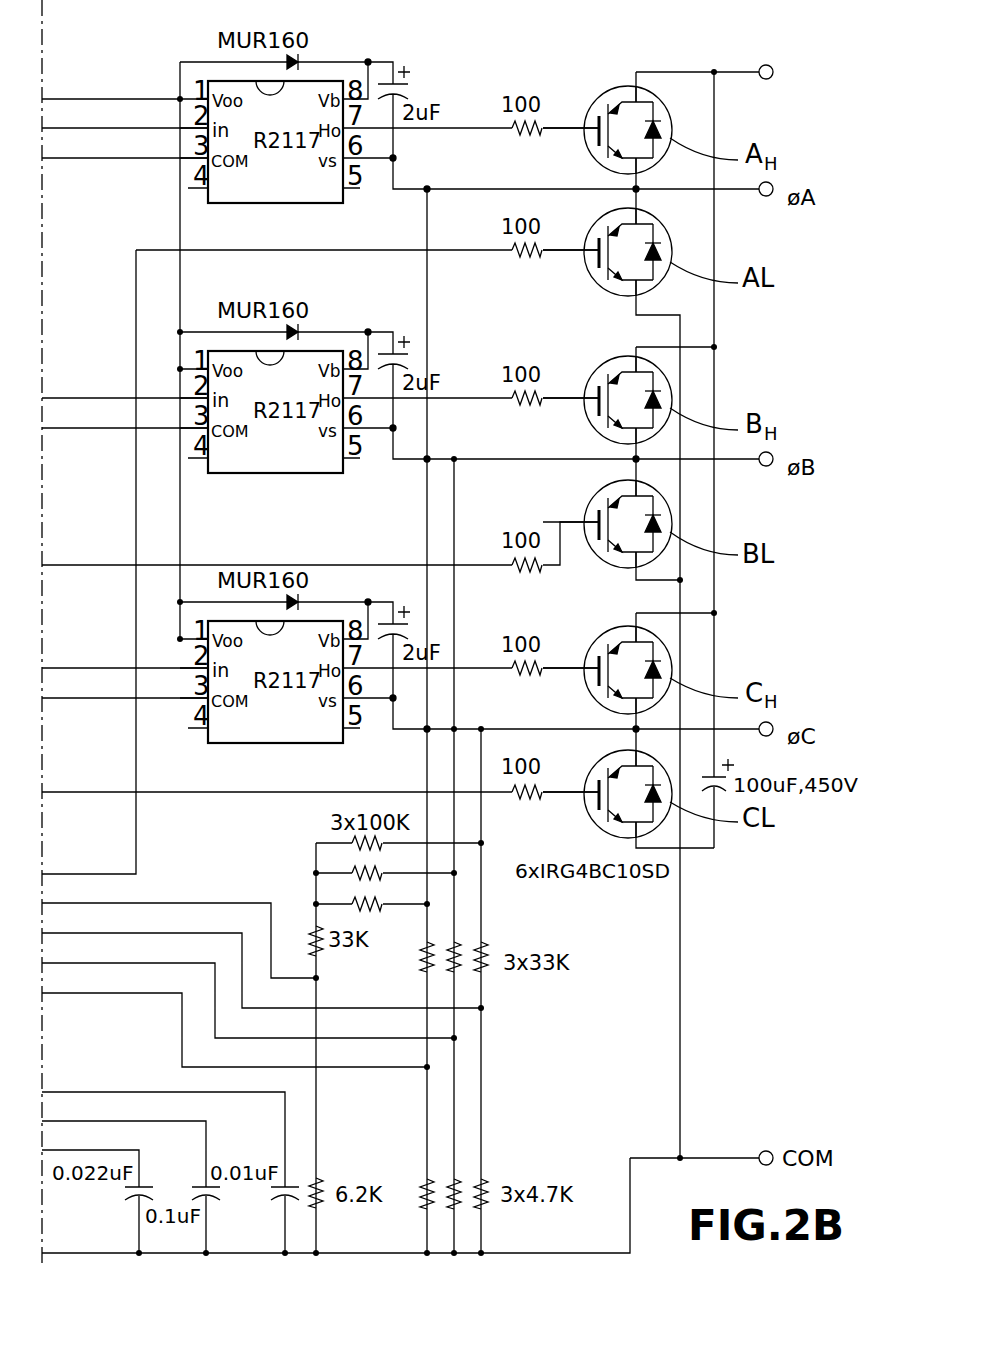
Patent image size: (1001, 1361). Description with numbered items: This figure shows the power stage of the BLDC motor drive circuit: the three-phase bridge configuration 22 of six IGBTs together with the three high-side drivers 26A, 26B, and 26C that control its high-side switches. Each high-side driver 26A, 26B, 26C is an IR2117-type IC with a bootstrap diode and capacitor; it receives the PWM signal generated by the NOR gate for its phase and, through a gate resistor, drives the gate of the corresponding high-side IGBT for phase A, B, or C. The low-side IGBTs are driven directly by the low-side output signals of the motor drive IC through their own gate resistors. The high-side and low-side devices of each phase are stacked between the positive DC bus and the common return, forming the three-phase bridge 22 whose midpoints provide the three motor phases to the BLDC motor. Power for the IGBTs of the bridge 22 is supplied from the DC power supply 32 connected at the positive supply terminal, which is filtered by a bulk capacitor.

The three-phase bridge configuration 22 is at (594, 84).
The DC power supply 32 is at (786, 52).
The high-side driver 26A is at (307, 203).
The high-side driver 26B is at (307, 473).
The high-side driver 26C is at (307, 743).